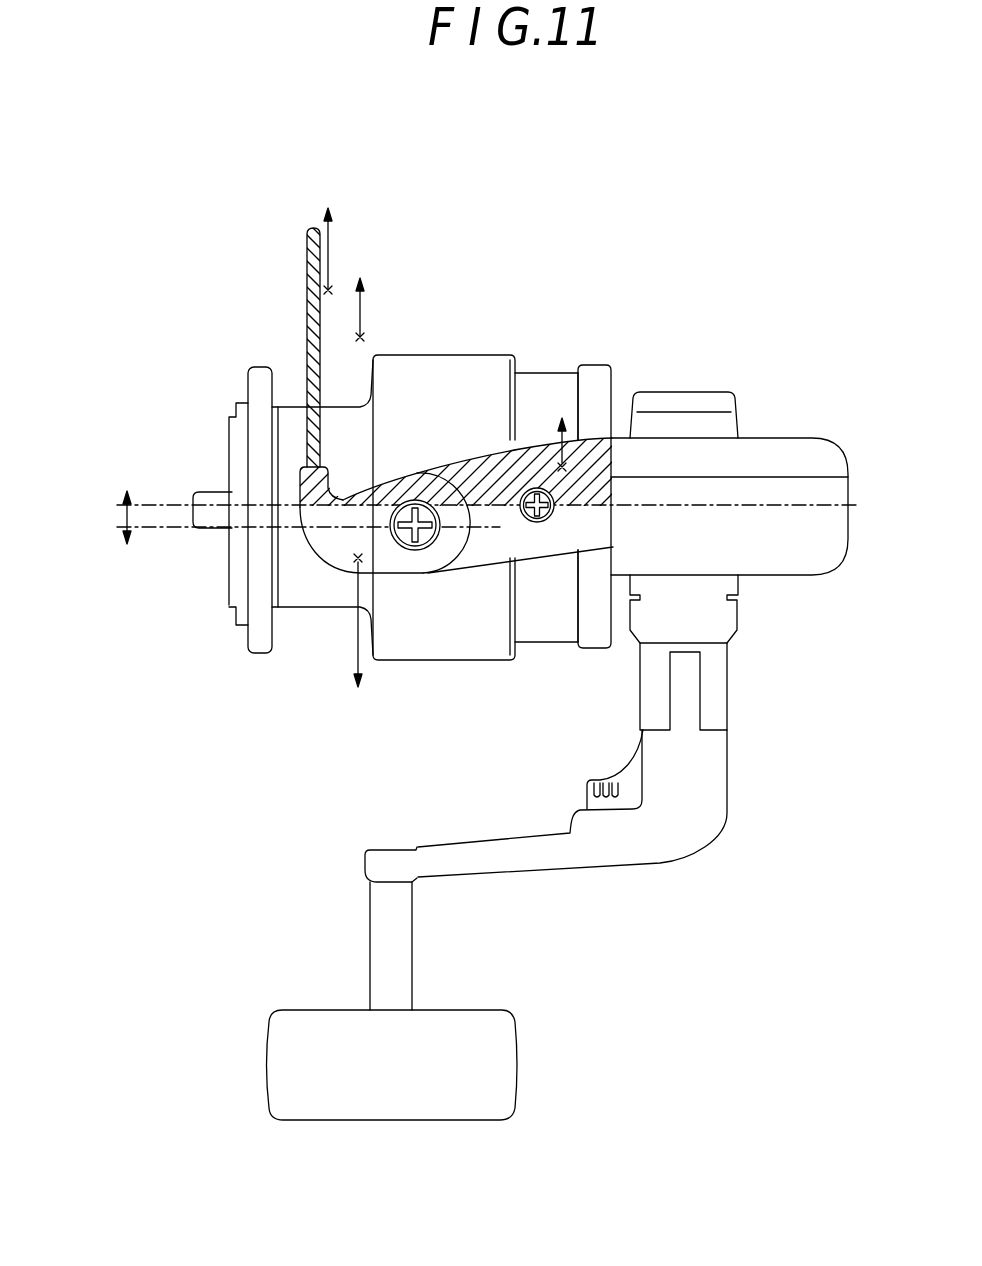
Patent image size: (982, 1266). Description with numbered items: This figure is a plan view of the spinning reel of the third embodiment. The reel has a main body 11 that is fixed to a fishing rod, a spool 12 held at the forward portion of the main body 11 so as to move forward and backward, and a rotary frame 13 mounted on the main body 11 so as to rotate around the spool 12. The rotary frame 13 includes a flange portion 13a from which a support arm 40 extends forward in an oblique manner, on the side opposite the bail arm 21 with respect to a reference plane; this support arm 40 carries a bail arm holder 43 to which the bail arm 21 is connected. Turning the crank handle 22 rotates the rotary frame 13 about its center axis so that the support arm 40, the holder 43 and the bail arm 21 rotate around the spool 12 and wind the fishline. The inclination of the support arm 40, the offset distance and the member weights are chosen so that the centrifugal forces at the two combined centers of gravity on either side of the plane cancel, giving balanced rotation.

The main body 11 is at (817, 457).
The spool 12 is at (415, 377).
The rotary frame 13 is at (546, 397).
The flange portion 13a is at (602, 375).
The bail arm 21 is at (313, 290).
The crank handle 22 is at (637, 835).
The support arm 40 is at (508, 548).
The bail arm holder 43 is at (340, 553).